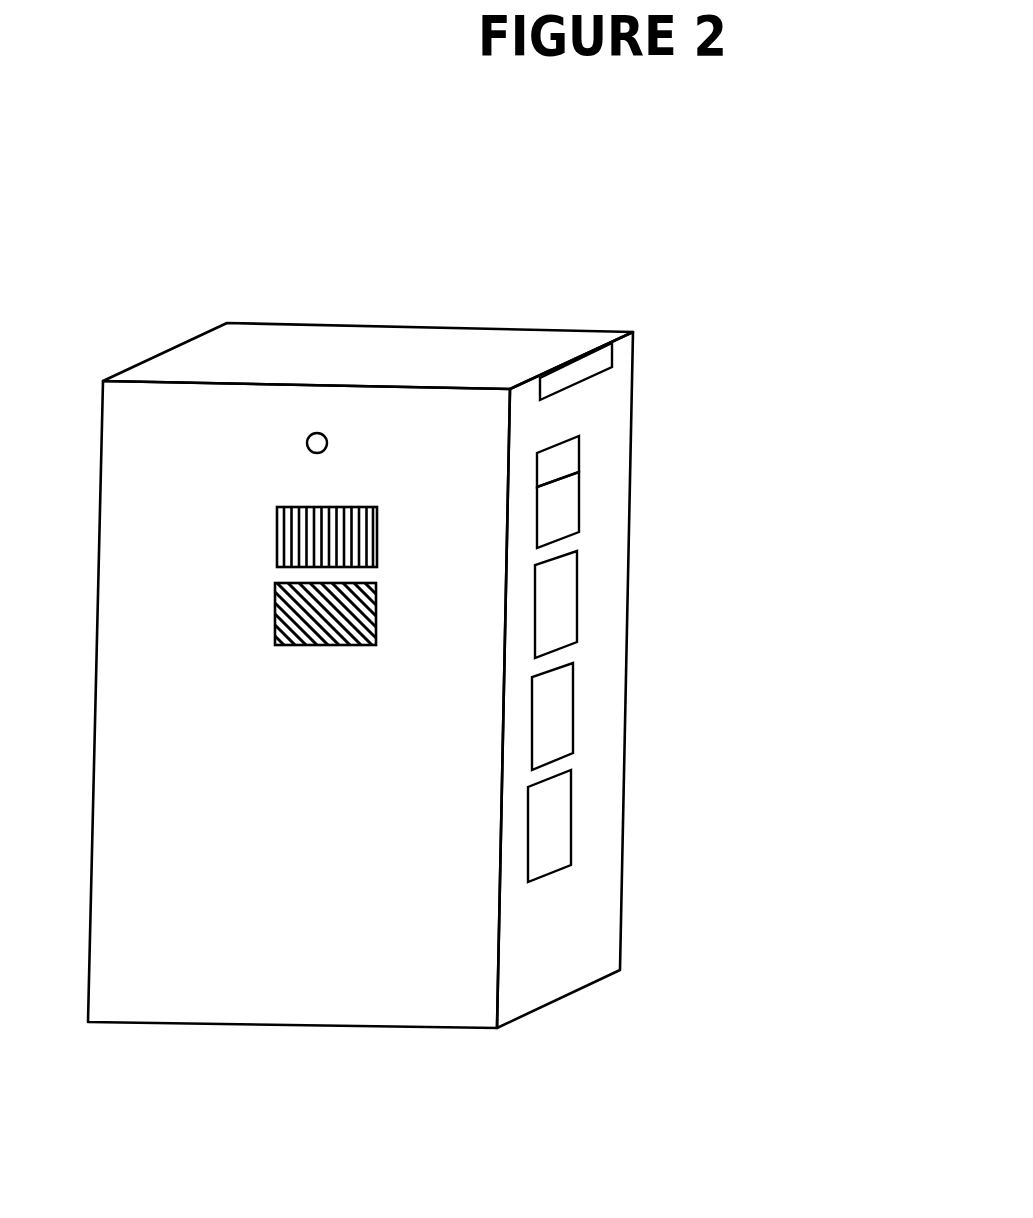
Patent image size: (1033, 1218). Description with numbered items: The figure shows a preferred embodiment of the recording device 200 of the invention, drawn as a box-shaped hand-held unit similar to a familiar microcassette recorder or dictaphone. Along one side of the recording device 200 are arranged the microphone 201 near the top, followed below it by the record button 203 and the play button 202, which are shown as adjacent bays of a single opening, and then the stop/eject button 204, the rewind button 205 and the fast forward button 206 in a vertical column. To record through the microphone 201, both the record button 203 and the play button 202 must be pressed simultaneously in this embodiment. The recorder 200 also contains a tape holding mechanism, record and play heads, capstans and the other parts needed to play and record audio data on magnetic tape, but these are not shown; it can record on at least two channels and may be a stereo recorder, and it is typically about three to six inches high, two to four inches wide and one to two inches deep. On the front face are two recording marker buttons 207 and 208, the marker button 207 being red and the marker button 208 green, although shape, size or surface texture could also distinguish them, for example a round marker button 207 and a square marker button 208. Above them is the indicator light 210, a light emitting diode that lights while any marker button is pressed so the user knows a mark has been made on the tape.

The recording device 200 is at (360, 653).
The microphone 201 is at (618, 354).
The play button 202 is at (586, 500).
The record button 203 is at (586, 445).
The stop/eject button 204 is at (581, 605).
The rewind button 205 is at (575, 713).
The fast forward button 206 is at (574, 817).
The marker button 207 is at (381, 528).
The marker button 208 is at (378, 605).
The indicator light 210 is at (327, 436).